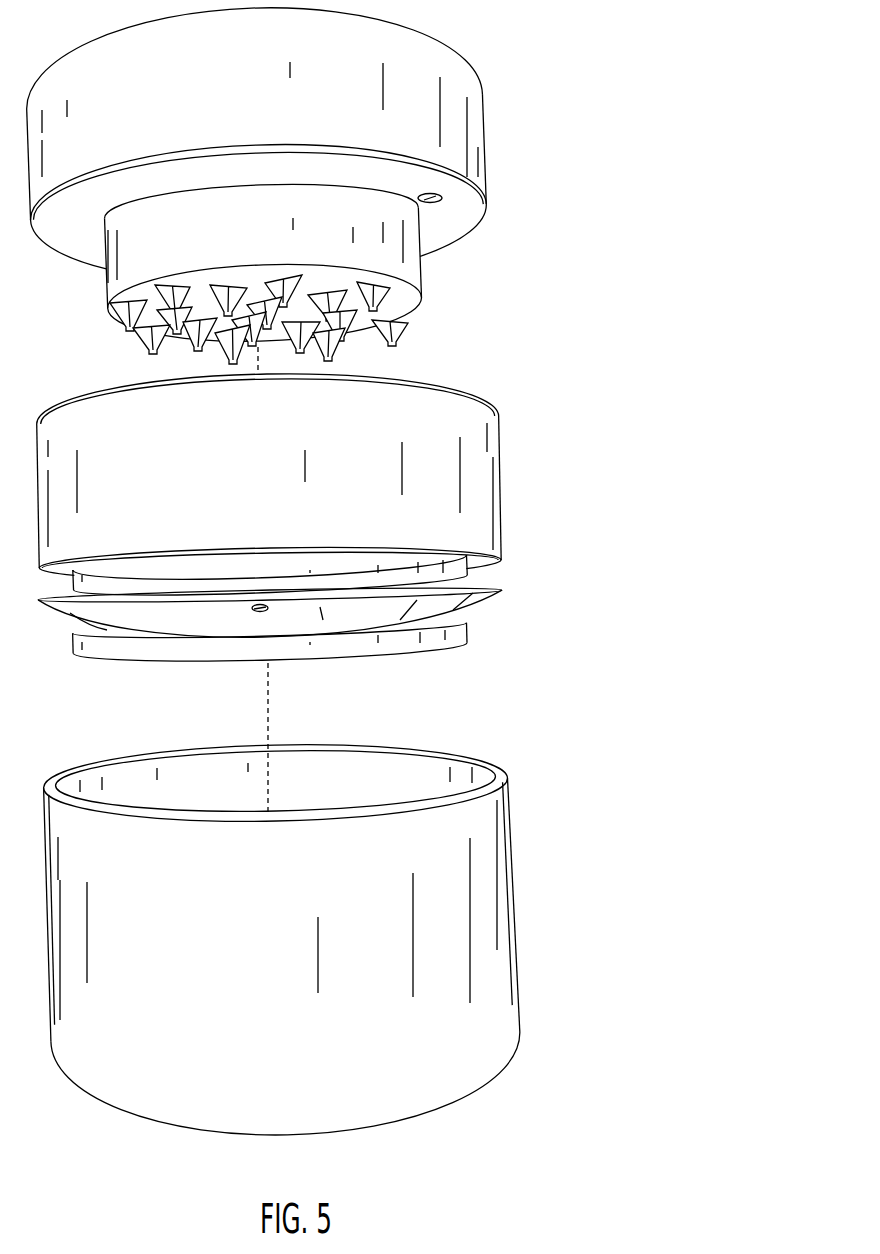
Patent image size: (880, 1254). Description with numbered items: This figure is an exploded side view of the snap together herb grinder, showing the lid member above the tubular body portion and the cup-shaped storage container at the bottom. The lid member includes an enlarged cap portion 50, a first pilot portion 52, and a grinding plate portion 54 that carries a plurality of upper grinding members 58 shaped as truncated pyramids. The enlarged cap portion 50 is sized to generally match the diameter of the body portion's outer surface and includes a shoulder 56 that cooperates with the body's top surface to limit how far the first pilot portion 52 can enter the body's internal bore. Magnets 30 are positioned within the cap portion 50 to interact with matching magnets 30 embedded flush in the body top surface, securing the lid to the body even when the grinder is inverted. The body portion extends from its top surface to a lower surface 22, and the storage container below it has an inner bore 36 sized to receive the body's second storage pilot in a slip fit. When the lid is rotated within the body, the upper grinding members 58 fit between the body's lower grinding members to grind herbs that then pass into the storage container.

The enlarged cap portion 50 is at (468, 142).
The magnets 30 is at (442, 197).
The shoulder 56 is at (462, 222).
The first pilot portion 52 is at (400, 265).
The grinding plate portion 54 is at (140, 297).
The upper grinding members 58 is at (397, 337).
The lower surface 22 is at (500, 557).
The inner bore 36 is at (460, 757).